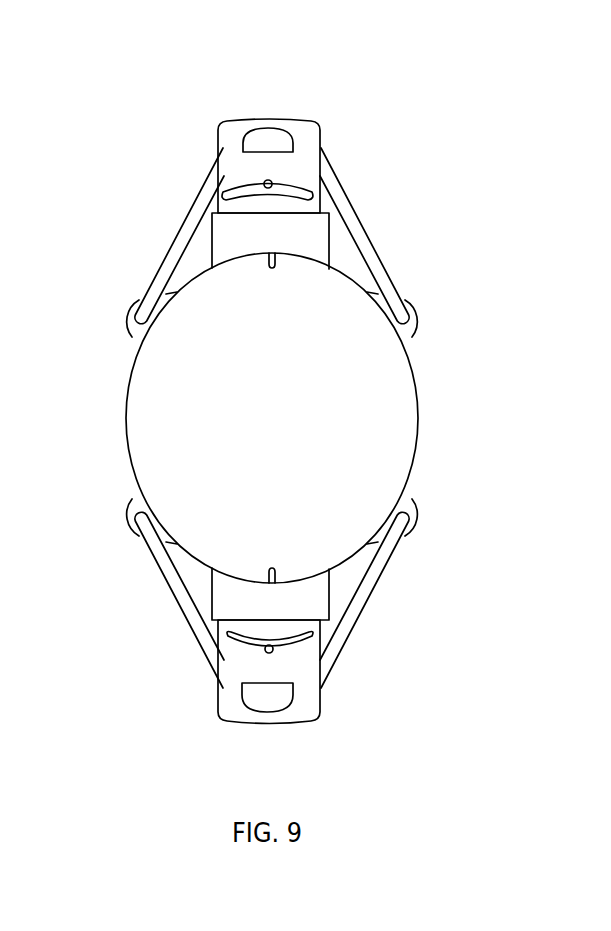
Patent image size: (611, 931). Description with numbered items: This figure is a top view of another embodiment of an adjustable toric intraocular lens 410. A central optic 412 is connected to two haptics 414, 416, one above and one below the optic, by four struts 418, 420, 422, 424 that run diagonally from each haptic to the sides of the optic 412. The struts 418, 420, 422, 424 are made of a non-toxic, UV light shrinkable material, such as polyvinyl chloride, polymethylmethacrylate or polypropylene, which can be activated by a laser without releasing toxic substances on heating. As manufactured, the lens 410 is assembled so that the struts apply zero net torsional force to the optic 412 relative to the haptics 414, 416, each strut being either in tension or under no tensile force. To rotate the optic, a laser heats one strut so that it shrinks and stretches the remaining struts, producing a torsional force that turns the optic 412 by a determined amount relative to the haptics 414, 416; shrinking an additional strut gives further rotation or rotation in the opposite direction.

The lens 410 is at (470, 154).
The optic 412 is at (402, 428).
The haptic 414 is at (310, 138).
The haptic 416 is at (308, 700).
The strut 418 is at (190, 213).
The strut 420 is at (367, 230).
The strut 422 is at (360, 603).
The strut 424 is at (168, 585).